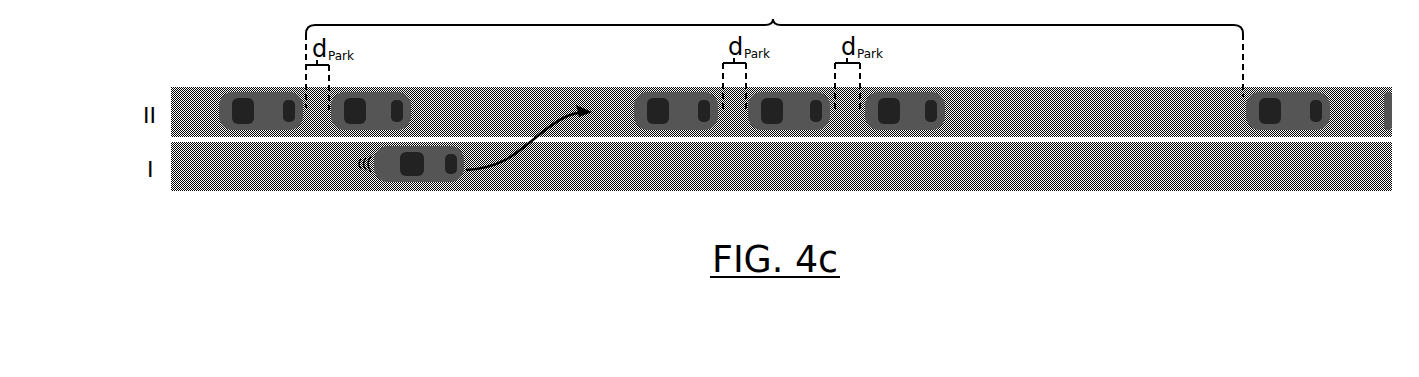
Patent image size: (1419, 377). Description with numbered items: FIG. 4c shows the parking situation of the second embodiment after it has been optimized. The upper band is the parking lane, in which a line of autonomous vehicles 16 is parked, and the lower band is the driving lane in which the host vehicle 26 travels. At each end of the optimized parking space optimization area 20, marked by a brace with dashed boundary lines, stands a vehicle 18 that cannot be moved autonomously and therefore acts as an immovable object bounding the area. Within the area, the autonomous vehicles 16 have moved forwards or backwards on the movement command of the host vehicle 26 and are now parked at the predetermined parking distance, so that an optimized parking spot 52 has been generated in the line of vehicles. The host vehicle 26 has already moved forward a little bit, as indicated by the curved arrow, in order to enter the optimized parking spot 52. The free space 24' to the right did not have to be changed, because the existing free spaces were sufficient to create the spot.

The autonomous vehicle 16 is at (393, 100).
The vehicle 18 is at (262, 97).
The parking space optimization area 20 is at (774, 54).
The free space 24' is at (1100, 90).
The host vehicle 26 is at (430, 163).
The optimized parking spot 52 is at (507, 102).